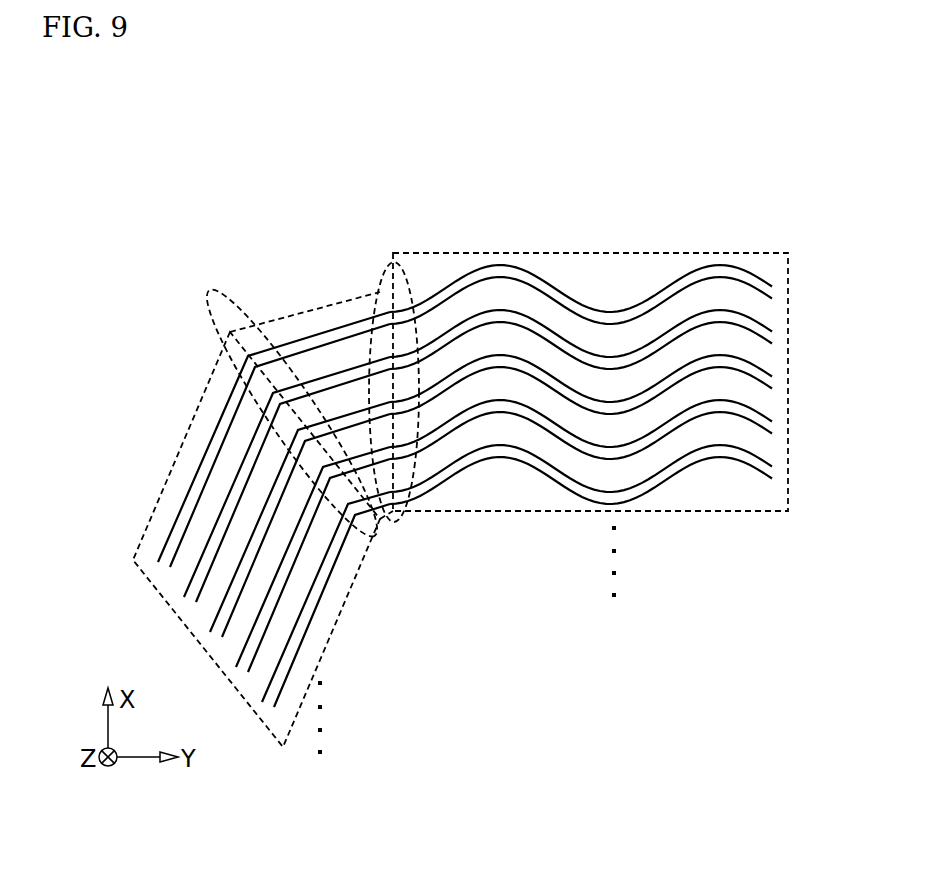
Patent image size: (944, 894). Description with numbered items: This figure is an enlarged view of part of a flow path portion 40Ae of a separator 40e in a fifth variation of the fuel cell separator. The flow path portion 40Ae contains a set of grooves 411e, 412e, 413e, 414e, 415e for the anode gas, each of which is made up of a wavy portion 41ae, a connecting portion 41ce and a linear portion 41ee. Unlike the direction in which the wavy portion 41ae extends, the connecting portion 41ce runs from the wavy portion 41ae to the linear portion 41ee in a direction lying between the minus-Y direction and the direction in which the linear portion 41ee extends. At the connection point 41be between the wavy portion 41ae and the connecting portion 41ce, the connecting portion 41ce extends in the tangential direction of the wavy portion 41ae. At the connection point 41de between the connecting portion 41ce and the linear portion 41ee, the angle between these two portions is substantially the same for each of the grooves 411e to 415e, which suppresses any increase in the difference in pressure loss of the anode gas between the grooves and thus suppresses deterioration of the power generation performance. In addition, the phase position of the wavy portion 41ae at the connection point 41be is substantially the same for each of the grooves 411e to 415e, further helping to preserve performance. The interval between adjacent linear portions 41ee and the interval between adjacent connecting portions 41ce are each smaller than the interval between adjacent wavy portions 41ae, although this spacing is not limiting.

The separator 40e is at (768, 155).
The flow path portion 40Ae is at (790, 205).
The wavy portion 41ae is at (527, 252).
The connection point 41be is at (383, 290).
The connecting portion 41ce is at (293, 313).
The connection point 41de is at (202, 346).
The linear portion 41ee is at (180, 453).
The groove 411e is at (779, 278).
The groove 412e is at (779, 323).
The groove 413e is at (779, 368).
The groove 414e is at (779, 413).
The groove 415e is at (779, 458).